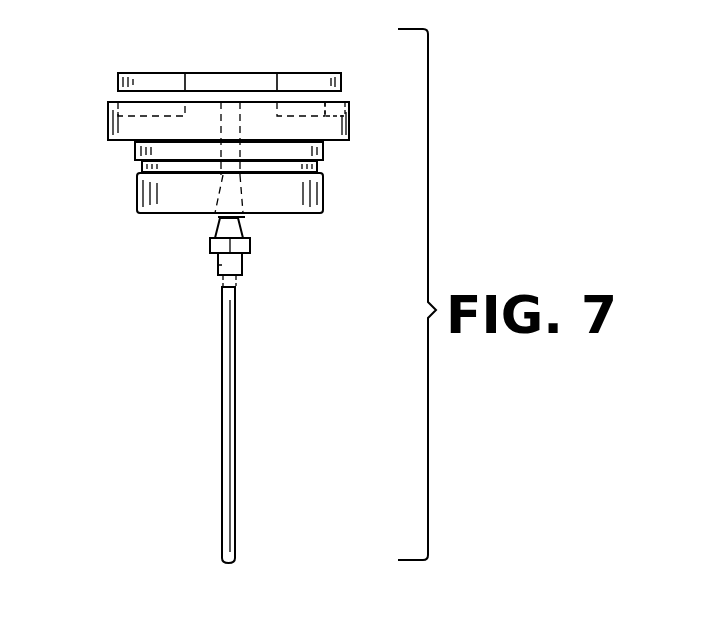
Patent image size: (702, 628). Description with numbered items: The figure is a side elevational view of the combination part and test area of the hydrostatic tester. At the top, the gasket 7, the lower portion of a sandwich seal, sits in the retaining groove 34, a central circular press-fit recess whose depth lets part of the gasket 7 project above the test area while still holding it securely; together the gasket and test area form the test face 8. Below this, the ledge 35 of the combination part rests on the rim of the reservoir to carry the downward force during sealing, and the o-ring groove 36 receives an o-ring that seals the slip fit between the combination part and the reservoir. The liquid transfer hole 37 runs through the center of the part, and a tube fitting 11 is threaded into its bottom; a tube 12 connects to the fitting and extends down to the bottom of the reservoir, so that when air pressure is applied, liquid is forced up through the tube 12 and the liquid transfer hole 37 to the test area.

The gasket 7 is at (323, 73).
The test face 8 is at (349, 125).
The retaining groove 34 is at (338, 95).
The ledge 35 is at (120, 141).
The o-ring groove 36 is at (323, 165).
The liquid transfer hole 37 is at (218, 196).
The tube fitting 11 is at (250, 247).
The tube 12 is at (236, 341).